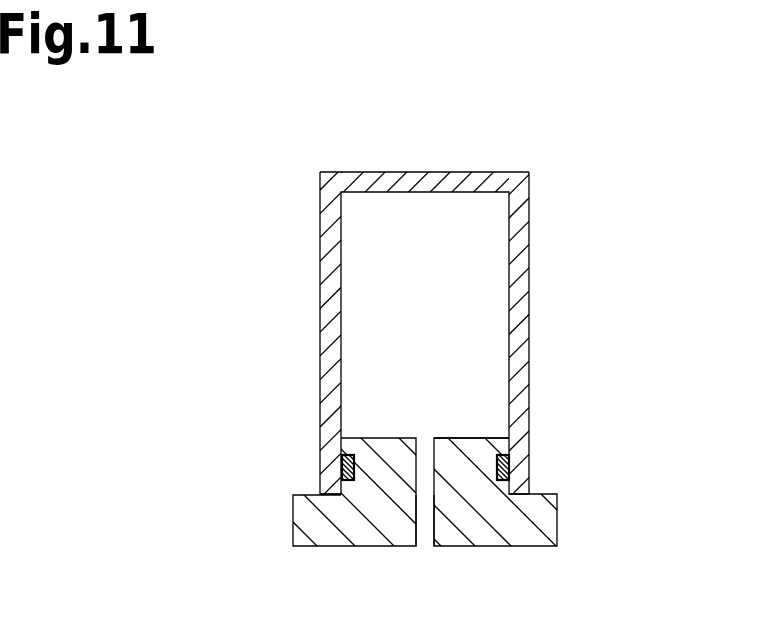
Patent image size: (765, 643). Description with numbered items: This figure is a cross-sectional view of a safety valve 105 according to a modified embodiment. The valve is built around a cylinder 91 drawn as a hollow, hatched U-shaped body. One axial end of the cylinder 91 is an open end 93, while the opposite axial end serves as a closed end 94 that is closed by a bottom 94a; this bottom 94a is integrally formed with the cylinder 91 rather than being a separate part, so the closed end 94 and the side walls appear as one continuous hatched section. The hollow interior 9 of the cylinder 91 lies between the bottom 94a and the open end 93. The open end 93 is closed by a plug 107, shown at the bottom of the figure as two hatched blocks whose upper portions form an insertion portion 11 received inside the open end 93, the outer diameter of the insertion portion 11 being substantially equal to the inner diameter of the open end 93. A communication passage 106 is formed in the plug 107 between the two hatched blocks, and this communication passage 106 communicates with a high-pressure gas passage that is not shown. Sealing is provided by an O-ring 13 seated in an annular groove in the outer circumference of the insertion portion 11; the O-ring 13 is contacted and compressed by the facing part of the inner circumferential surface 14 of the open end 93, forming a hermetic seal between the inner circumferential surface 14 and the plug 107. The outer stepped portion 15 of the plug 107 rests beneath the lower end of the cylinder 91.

The safety valve 105 is at (213, 130).
The cylinder 91 is at (530, 252).
The closed end 94 is at (513, 178).
The bottom 94a is at (415, 178).
The internal space 9 is at (434, 330).
The open end 93 is at (330, 483).
The plug 107 is at (292, 512).
The right base block 15 is at (553, 522).
The insertion portion 11 is at (475, 447).
The communication passage 106 is at (418, 517).
The O-ring 13 is at (342, 462).
The inner circumferential surface 14 is at (507, 480).